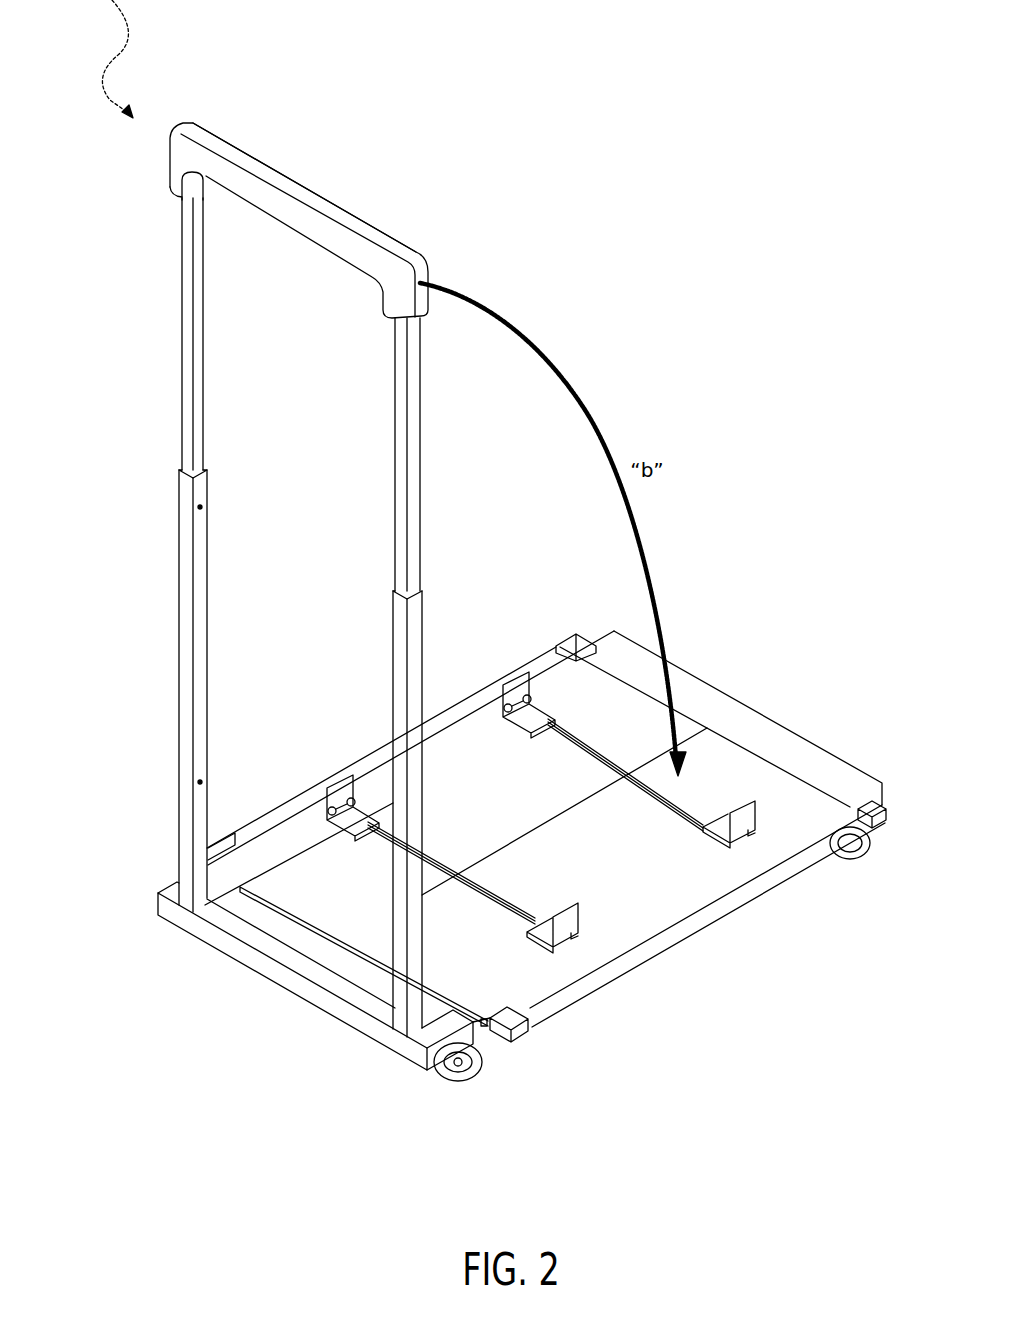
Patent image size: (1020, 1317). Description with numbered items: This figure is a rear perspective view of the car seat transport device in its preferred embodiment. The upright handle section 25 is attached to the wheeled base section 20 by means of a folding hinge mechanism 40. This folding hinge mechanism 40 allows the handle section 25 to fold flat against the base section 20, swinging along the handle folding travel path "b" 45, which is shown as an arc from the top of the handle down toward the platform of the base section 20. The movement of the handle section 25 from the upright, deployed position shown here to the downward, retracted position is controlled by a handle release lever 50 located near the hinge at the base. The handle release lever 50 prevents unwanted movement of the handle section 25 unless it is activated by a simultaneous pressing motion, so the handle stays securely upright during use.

The base section 20 is at (525, 1047).
The handle section 25 is at (150, 147).
The folding hinge mechanism 40 is at (303, 958).
The handle folding travel path 45 is at (600, 437).
The handle release lever 50 is at (490, 1028).